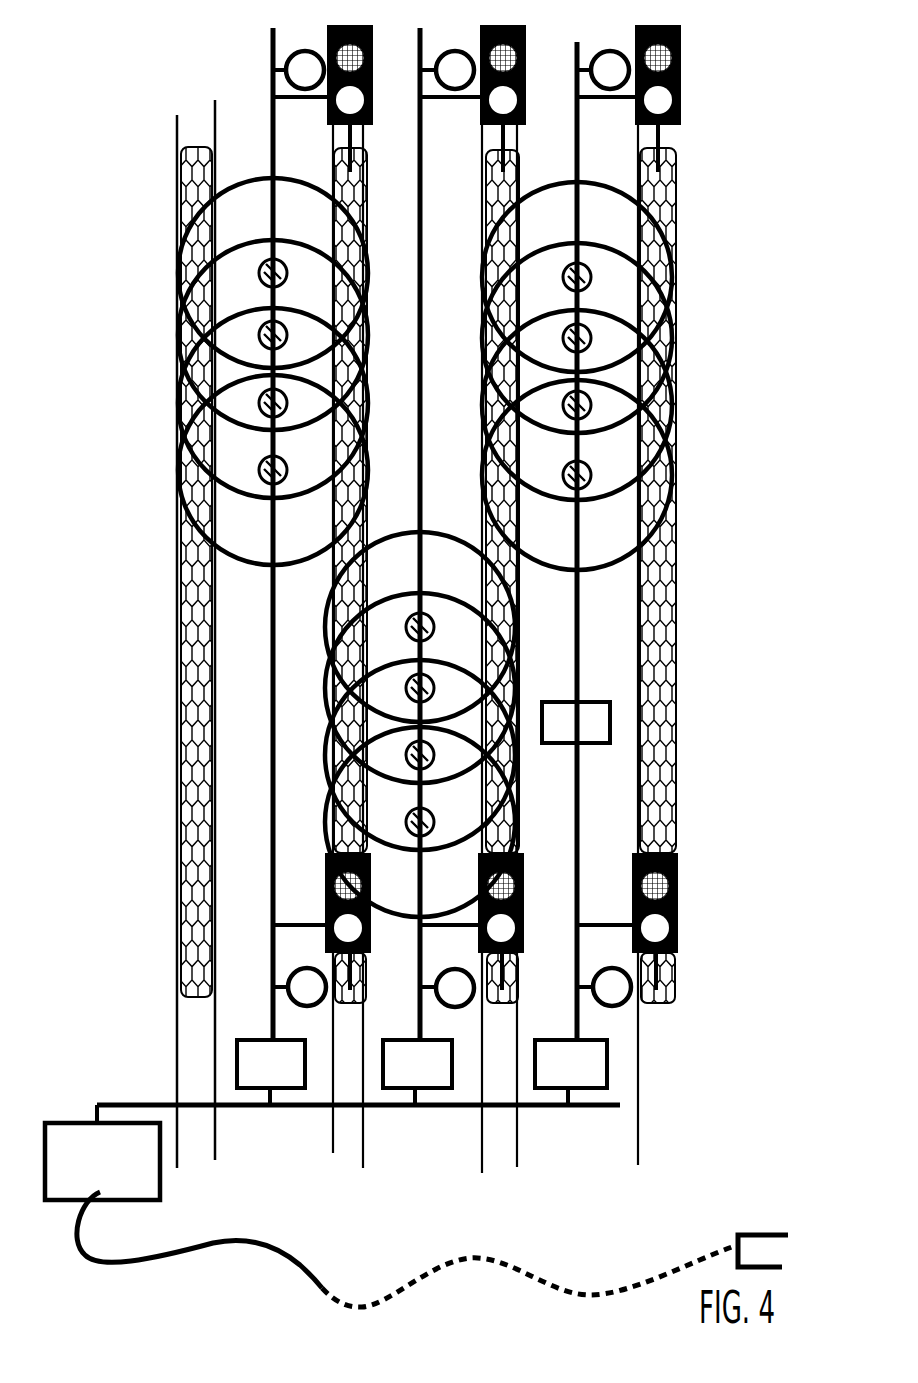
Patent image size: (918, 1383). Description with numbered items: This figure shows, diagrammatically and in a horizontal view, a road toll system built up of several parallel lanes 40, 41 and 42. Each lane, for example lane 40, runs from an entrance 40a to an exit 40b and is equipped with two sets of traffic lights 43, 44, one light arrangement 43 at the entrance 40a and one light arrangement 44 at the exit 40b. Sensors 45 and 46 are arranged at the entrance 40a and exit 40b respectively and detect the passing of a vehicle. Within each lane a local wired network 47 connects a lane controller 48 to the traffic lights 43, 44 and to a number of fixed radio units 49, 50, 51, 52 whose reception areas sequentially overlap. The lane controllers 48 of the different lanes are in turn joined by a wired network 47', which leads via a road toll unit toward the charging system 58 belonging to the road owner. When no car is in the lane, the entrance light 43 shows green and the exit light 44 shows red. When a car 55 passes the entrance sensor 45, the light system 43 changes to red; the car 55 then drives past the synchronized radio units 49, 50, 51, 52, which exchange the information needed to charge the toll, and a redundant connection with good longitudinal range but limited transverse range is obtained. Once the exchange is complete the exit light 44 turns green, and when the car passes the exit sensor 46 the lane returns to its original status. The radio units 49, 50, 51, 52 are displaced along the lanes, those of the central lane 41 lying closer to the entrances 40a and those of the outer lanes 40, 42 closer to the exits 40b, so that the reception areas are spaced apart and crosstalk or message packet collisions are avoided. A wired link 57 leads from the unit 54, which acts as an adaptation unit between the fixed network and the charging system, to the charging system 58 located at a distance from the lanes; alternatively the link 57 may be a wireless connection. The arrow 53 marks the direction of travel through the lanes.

The lane 40 is at (610, 615).
The entrance 40a is at (680, 1012).
The exit 40b is at (690, 147).
The lane 41 is at (387, 515).
The lane 42 is at (233, 747).
The traffic light 43 is at (685, 898).
The traffic light 44 is at (690, 80).
The sensor 45 is at (612, 997).
The sensor 46 is at (602, 60).
The local wired network 47 is at (529, 534).
The wired network 47' is at (349, 1073).
The lane controller 48 is at (583, 1075).
The radio unit 49 is at (588, 467).
The radio unit 50 is at (588, 396).
The radio unit 51 is at (588, 330).
The radio unit 52 is at (588, 268).
The air flow direction arrow 53 is at (415, 1147).
The unit 54 is at (140, 1175).
The car 55 is at (590, 727).
The wired link 57 is at (232, 1241).
The charging system 58 is at (757, 1248).